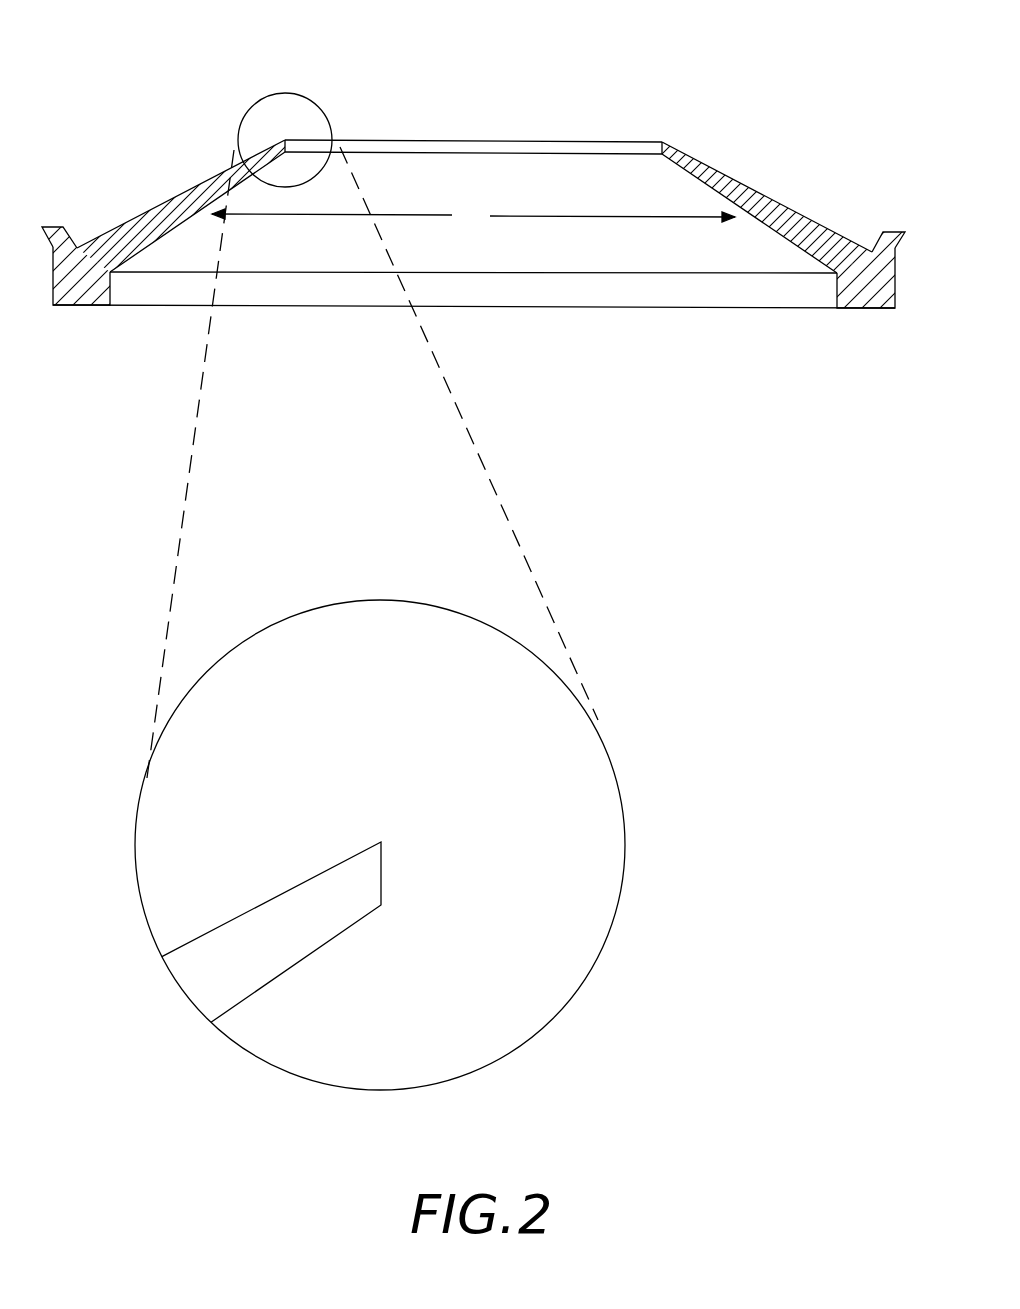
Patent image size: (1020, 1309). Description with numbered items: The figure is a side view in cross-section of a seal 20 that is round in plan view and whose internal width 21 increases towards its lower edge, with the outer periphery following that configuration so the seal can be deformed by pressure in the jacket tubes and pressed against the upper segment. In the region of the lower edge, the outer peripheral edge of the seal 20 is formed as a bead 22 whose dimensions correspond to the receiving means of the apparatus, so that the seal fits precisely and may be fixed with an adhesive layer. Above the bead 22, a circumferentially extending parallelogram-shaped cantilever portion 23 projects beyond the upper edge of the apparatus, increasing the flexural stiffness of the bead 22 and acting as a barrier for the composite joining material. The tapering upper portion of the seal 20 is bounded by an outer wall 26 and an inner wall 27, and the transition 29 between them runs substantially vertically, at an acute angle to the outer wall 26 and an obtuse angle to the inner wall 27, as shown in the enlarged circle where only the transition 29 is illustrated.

The seal 20 is at (473, 520).
The internal width 21 is at (473, 216).
The bead 22 is at (75, 312).
The cantilever portion 23 is at (60, 222).
The outer wall 26 is at (742, 175).
The inner wall 27 is at (755, 227).
The transition 29 is at (293, 95).